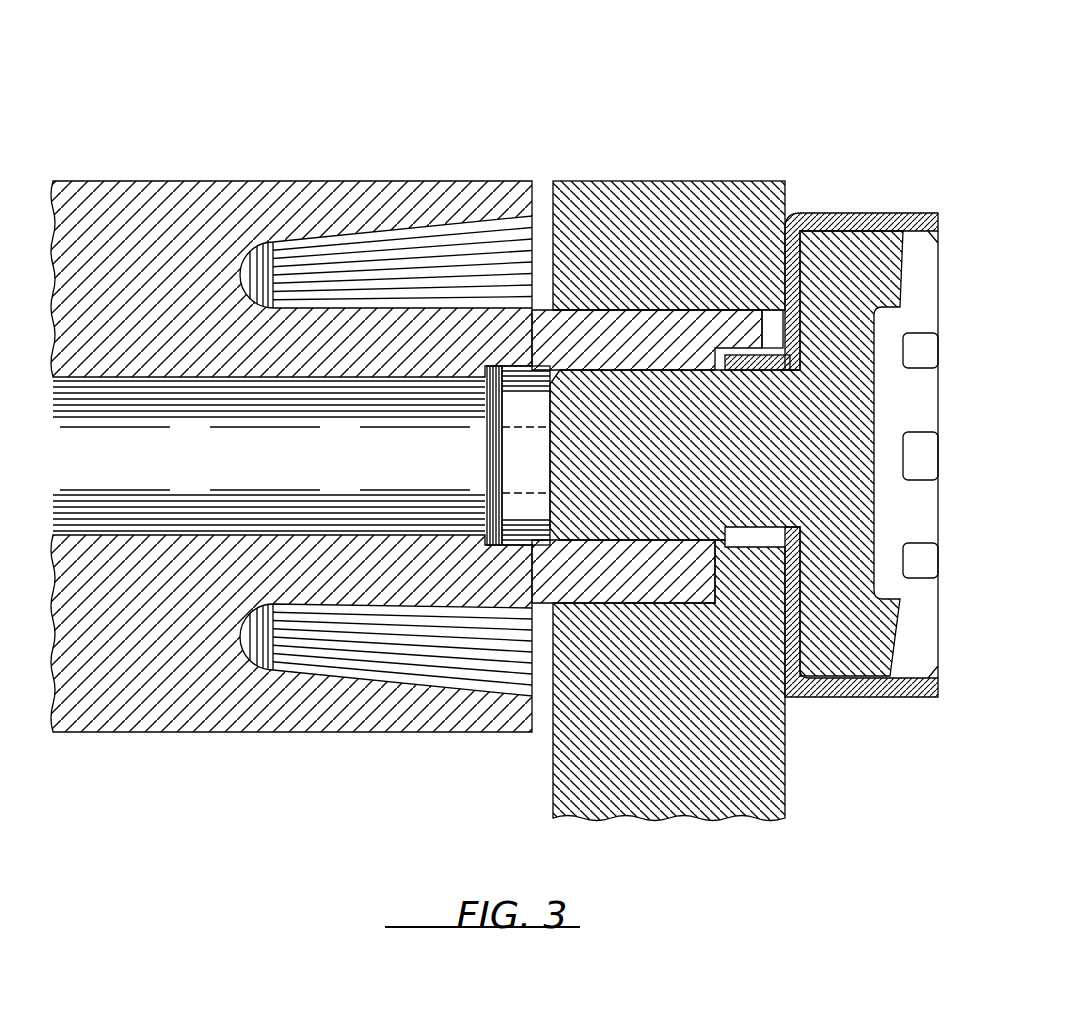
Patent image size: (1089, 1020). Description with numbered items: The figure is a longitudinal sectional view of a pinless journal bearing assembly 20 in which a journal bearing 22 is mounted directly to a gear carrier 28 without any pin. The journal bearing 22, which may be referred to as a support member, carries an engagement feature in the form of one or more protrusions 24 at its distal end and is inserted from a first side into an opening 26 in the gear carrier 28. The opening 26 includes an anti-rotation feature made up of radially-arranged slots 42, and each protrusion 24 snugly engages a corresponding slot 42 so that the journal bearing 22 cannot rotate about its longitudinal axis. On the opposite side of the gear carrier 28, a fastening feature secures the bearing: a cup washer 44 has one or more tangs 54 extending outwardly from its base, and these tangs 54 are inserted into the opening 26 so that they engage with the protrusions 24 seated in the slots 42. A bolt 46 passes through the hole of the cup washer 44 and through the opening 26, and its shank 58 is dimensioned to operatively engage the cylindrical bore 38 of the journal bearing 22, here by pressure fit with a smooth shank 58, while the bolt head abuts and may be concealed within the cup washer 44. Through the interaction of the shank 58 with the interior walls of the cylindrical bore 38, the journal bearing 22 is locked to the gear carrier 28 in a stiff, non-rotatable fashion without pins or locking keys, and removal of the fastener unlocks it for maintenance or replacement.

The journal bearing assembly 20 is at (522, 134).
The journal bearing 22 is at (160, 248).
The protrusion 24 is at (731, 338).
The opening 26 is at (703, 310).
The gear carrier 28 is at (662, 212).
The cylindrical bore 38 is at (523, 503).
The slot 42 is at (773, 338).
The cup washer 44 is at (927, 224).
The bolt 46 is at (919, 275).
The tang 54 is at (790, 357).
The shank 58 is at (787, 680).